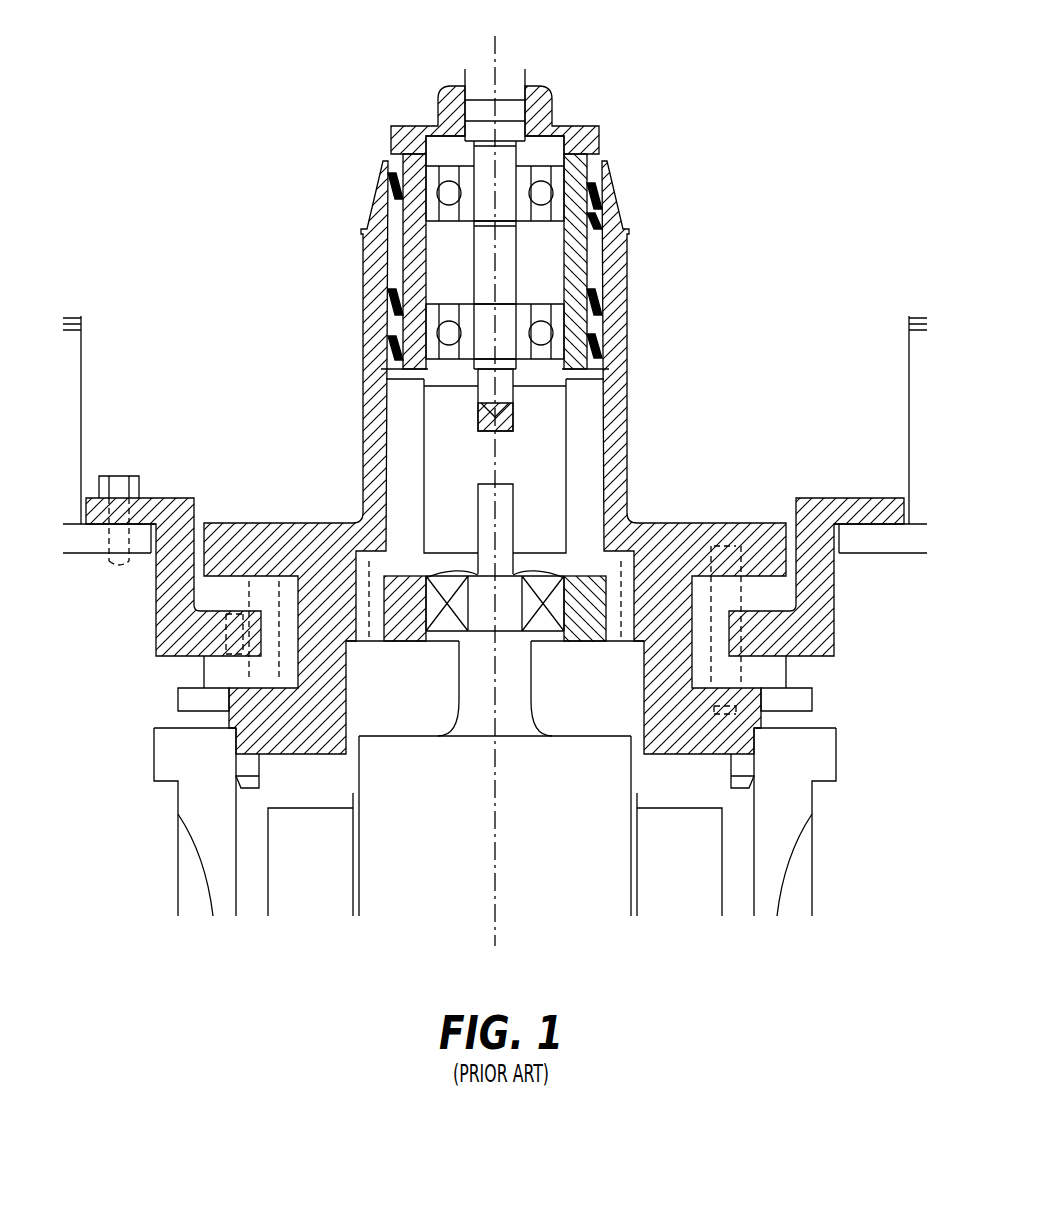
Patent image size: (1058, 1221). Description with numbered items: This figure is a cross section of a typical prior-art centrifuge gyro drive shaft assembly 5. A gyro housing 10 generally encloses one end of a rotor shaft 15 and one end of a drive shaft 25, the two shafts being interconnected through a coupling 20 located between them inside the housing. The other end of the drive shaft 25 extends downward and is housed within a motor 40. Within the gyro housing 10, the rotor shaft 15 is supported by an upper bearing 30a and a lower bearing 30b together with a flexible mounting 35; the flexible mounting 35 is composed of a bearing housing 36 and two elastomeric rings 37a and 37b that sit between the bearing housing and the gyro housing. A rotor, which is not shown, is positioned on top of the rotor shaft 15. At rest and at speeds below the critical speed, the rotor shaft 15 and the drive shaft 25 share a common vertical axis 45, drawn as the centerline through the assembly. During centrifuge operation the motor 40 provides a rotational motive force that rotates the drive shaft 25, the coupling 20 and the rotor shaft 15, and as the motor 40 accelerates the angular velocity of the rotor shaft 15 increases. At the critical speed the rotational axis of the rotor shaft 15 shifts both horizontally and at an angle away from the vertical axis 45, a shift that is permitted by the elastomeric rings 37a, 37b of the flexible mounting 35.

The centrifuge gyro drive shaft assembly 5 is at (654, 47).
The gyro housing 10 is at (372, 253).
The rotor shaft 15 is at (483, 378).
The coupling 20 is at (443, 465).
The drive shaft 25 is at (488, 567).
The bearing 30a is at (553, 177).
The bearing 30b is at (597, 347).
The flexible mounting 35 is at (592, 218).
The bearing housing 36 is at (575, 187).
The elastomeric ring 37a is at (598, 228).
The elastomeric ring 37b is at (595, 302).
The motor 40 is at (410, 878).
The vertical axis 45 is at (494, 928).